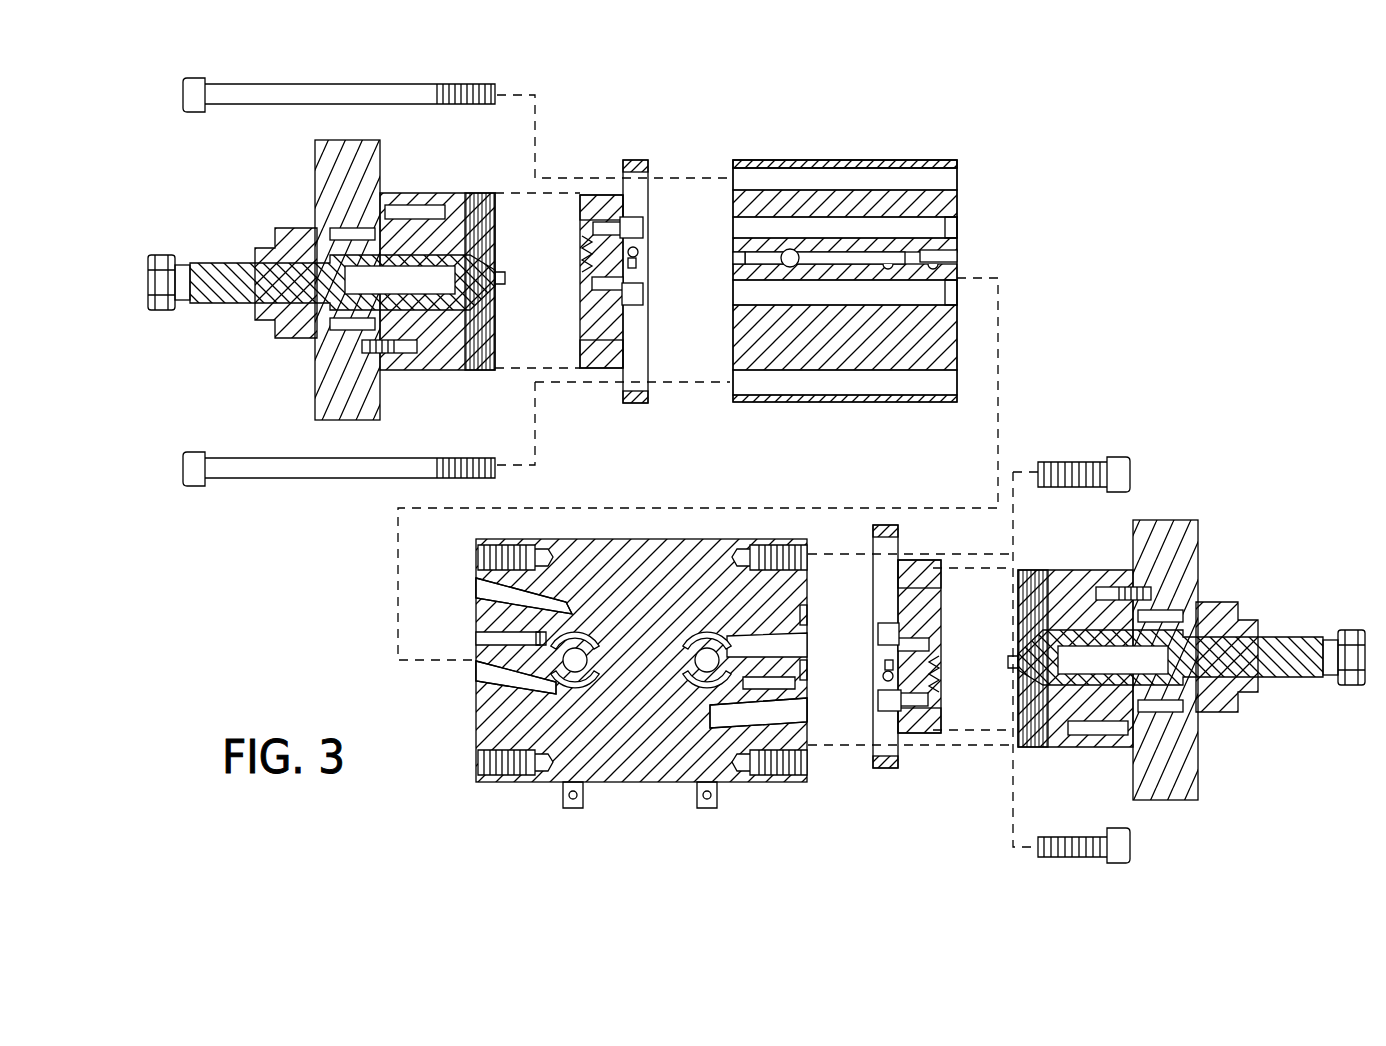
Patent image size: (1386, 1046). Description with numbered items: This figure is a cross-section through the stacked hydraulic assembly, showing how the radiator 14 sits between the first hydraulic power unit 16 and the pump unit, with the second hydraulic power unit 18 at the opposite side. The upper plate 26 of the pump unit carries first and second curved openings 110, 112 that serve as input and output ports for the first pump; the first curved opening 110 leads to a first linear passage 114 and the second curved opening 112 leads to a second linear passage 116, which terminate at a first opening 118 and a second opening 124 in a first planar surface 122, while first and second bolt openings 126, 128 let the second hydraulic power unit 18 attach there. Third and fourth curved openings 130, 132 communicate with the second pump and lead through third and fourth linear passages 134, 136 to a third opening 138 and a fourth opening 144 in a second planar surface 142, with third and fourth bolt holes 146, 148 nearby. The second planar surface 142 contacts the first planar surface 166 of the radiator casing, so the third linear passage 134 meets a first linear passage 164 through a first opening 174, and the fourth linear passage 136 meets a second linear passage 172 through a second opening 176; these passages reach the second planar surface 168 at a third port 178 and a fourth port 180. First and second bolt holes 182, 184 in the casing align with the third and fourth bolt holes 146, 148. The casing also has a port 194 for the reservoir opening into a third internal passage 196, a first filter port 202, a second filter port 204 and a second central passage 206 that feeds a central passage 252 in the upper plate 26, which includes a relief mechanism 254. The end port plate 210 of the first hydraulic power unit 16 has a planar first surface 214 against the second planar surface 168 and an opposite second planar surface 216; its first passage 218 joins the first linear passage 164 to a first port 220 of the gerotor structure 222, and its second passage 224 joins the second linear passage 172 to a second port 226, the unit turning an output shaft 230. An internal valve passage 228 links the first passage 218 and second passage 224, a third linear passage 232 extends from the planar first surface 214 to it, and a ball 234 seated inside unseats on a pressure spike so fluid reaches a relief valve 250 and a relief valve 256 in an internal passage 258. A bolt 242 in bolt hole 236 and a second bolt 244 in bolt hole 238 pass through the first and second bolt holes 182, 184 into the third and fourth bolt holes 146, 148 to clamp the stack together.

The radiator 14 is at (940, 105).
The first hydraulic power unit 16 is at (268, 391).
The second hydraulic power unit 18 is at (1172, 492).
The upper plate 26 is at (662, 775).
The first curved opening 110 is at (692, 615).
The second curved opening 112 is at (686, 705).
The first linear passage 114 is at (790, 635).
The second linear passage 116 is at (745, 718).
The first opening 118 is at (810, 646).
The first planar surface 122 is at (810, 615).
The second opening 124 is at (808, 710).
The first bolt opening 126 is at (752, 556).
The second bolt opening 128 is at (752, 767).
The third curved opening 130 is at (578, 624).
The fourth curved opening 132 is at (598, 688).
The third linear passage 134 is at (515, 600).
The fourth linear passage 136 is at (505, 682).
The third opening 138 is at (476, 600).
The second planar surface 142 is at (473, 742).
The fourth opening 144 is at (480, 672).
The third bolt hole 146 is at (545, 556).
The fourth bolt hole 148 is at (545, 765).
The first linear passage 164 is at (920, 220).
The first planar surface 166 is at (960, 196).
The second planar surface 168 is at (730, 336).
The second linear passage 172 is at (795, 300).
The first opening 174 is at (958, 227).
The second opening 176 is at (958, 290).
The third port 178 is at (731, 228).
The fourth port 180 is at (731, 298).
The first bolt hole 182 is at (832, 178).
The second bolt hole 184 is at (835, 385).
The port 194 is at (790, 249).
The third internal passage 196 is at (856, 252).
The first filter port 202 is at (888, 270).
The second filter port 204 is at (933, 270).
The second central passage 206 is at (950, 257).
The end port plate 210 is at (612, 203).
The planar first surface 214 is at (654, 362).
The second planar surface 216 is at (578, 345).
The first passage 218 is at (605, 212).
The first port 220 is at (497, 230).
The gerotor structure 222 is at (445, 200).
The second passage 224 is at (630, 306).
The second port 226 is at (497, 287).
The internal valve passage 228 is at (580, 243).
The output shaft 230 is at (178, 305).
The third linear passage 232 is at (640, 262).
The ball 234 is at (640, 248).
The bolt hole 236 is at (638, 158).
The bolt hole 238 is at (637, 403).
The bolt 242 is at (275, 104).
The second bolt 244 is at (275, 480).
The relief valve 250 is at (731, 258).
The central passage 252 is at (490, 636).
The relief mechanism 254 is at (540, 622).
The relief valve 256 is at (810, 678).
The internal passage 258 is at (758, 672).